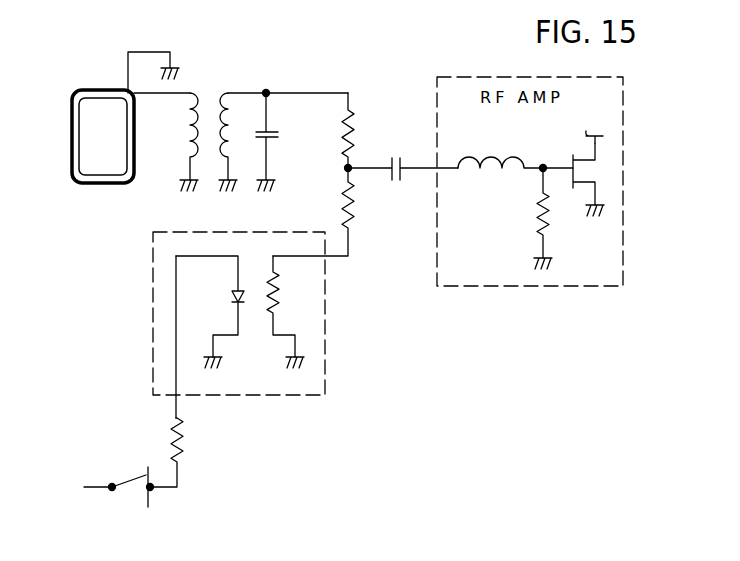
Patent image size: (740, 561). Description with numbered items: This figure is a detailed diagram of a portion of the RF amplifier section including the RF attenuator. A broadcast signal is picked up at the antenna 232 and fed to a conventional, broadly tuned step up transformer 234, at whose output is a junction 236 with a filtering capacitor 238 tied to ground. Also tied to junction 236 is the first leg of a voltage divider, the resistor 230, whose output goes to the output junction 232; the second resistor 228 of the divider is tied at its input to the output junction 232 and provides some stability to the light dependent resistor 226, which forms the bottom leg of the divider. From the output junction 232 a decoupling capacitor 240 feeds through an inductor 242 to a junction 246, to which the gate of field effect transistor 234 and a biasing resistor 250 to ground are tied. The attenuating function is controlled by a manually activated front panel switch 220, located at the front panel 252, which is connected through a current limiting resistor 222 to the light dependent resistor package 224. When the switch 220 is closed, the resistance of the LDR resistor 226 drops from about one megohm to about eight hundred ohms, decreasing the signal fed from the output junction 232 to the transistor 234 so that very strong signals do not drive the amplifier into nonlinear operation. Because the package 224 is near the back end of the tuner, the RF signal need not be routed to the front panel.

The antenna / output junction 232 is at (102, 90).
The step up transformer / field effect transistor 234 is at (195, 93).
The junction 236 is at (267, 91).
The filtering capacitor 238 is at (272, 131).
The resistor 230 is at (353, 118).
The decoupling capacitor 240 is at (394, 182).
The inductor 242 is at (474, 156).
The junction 246 is at (543, 165).
The biasing resistor 250 is at (540, 230).
The second resistor 228 is at (355, 222).
The light dependent resistor 226 is at (278, 303).
The light dependent resistor package 224 is at (313, 396).
The current limiting resistor 222 is at (182, 426).
The front panel switch 220 is at (122, 484).
The front panel 252 is at (152, 497).